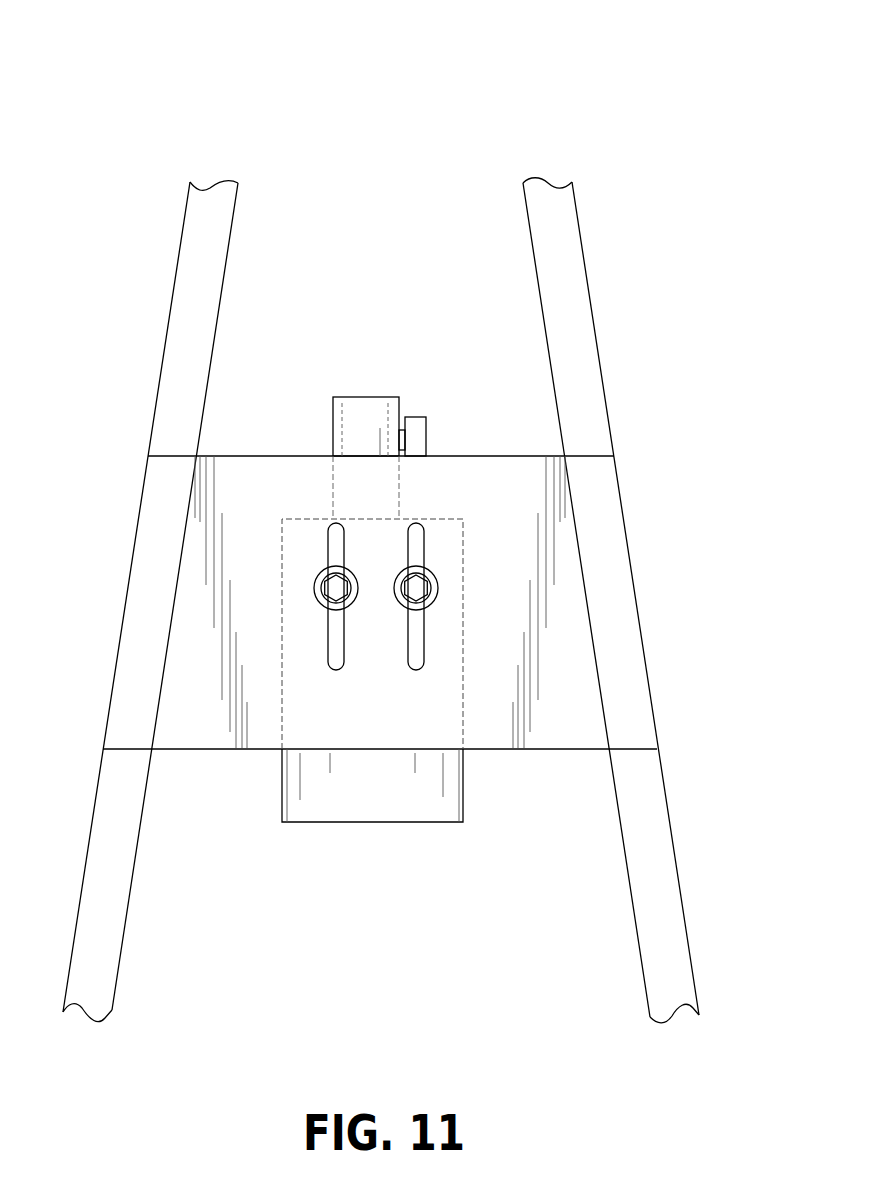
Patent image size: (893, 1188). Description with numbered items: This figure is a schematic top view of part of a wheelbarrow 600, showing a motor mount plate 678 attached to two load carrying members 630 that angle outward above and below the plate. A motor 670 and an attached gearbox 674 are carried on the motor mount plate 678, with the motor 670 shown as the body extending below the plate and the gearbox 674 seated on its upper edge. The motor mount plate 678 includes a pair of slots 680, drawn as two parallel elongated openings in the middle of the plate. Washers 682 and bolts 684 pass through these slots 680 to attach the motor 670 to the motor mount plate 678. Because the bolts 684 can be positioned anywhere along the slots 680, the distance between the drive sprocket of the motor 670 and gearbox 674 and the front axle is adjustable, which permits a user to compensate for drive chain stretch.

The wheelbarrow 600 is at (397, 523).
The load carrying members 630 is at (173, 292).
The motor 670 is at (363, 797).
The gearbox 674 is at (362, 418).
The motor mount plate 678 is at (608, 552).
The slots 680 is at (329, 658).
The washers 682 is at (313, 600).
The bolts 684 is at (356, 579).